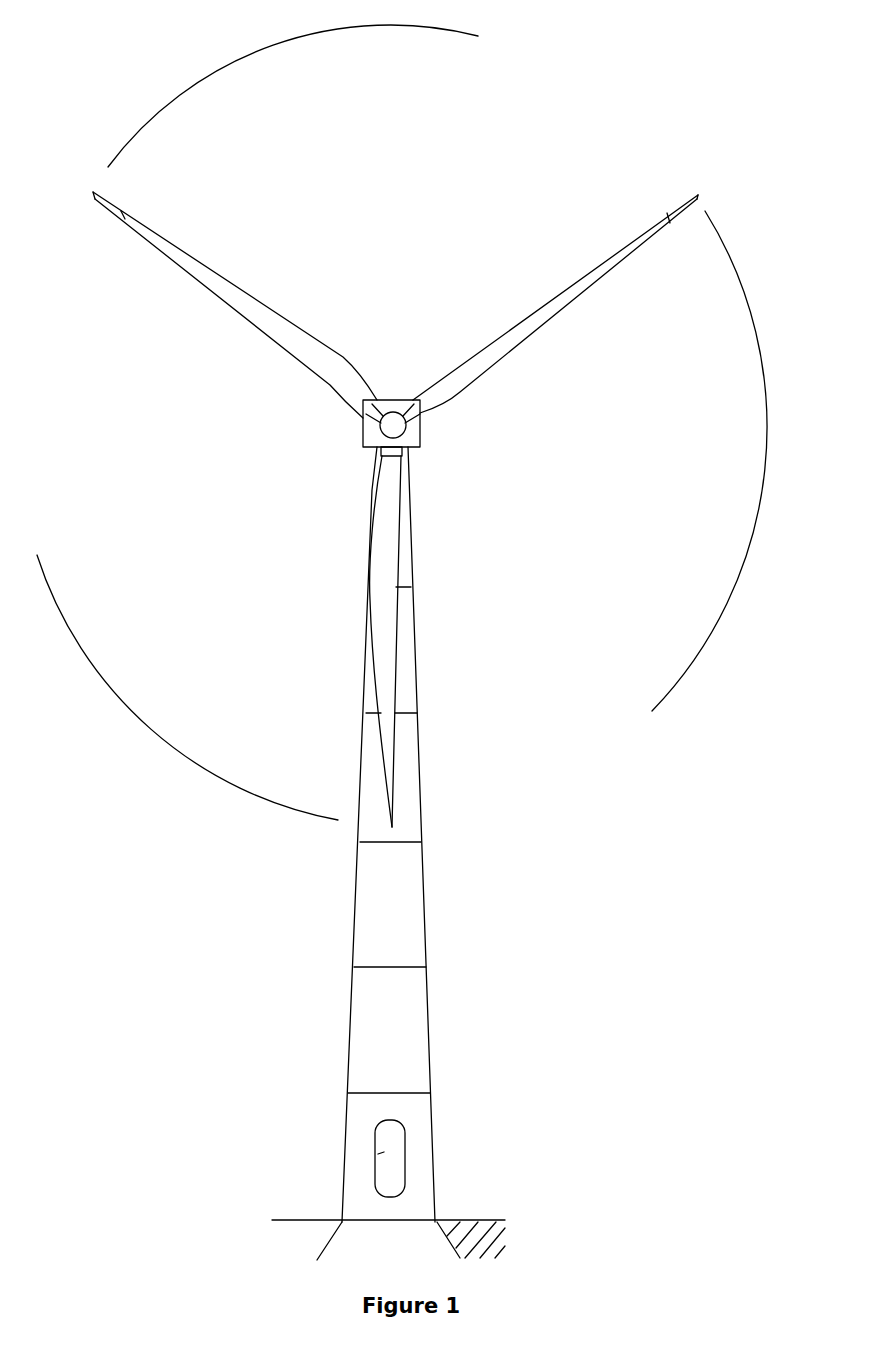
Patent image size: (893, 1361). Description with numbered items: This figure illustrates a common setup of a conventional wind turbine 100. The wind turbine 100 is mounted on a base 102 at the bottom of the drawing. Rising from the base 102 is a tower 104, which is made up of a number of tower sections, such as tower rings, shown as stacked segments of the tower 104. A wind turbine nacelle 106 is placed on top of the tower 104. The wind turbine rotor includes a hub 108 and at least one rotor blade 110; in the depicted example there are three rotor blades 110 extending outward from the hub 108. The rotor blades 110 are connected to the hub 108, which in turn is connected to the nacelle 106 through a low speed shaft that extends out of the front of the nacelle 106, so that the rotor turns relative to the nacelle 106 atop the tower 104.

The wind turbine 100 is at (322, 1054).
The base 102 is at (333, 1250).
The tower 104 is at (418, 917).
The wind turbine nacelle 106 is at (420, 447).
The hub 108 is at (368, 428).
The rotor blade 110 is at (393, 677).